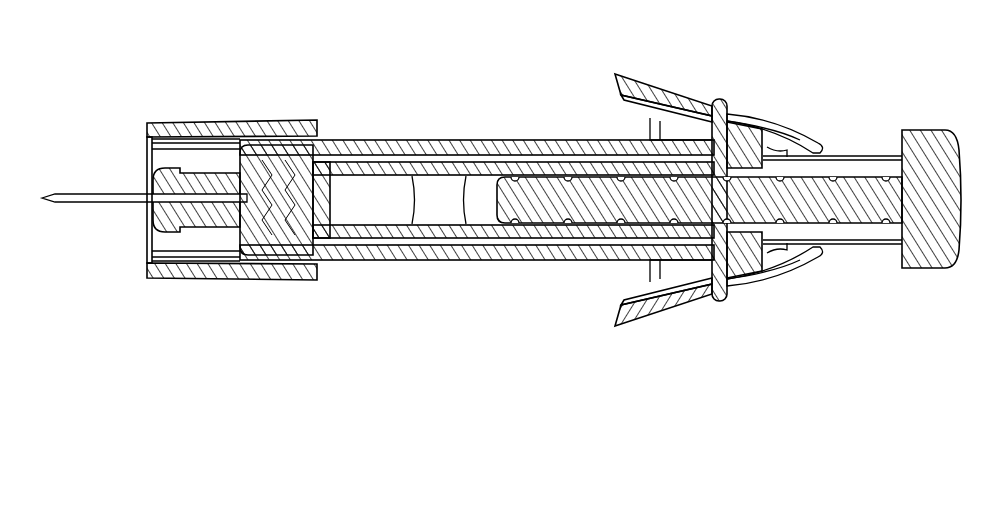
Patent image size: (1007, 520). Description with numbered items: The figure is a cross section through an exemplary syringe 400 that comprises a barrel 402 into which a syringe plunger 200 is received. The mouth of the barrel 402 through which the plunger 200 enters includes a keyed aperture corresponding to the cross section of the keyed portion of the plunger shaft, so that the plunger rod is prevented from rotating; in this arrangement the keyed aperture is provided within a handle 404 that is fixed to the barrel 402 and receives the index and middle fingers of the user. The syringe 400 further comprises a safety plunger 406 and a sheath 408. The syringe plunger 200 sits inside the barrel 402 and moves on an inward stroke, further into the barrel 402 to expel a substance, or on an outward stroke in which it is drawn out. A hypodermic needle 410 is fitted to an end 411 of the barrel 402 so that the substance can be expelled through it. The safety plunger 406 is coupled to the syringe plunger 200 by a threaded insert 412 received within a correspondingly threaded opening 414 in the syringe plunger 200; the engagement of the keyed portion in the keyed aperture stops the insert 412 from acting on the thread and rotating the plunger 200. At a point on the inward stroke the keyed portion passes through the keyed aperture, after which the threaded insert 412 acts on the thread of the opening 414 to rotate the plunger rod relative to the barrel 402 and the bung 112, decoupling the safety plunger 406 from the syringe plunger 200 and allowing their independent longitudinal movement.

The syringe 400 is at (170, 94).
The plunger 200 is at (452, 295).
The barrel 402 is at (346, 140).
The threaded opening 414 is at (433, 190).
The bung 112 is at (197, 200).
The hypodermic needle 410 is at (100, 205).
The end of the barrel 411 is at (232, 270).
The sheath 408 is at (298, 280).
The handle 404 is at (670, 310).
The threaded insert 412 is at (782, 262).
The safety plunger 406 is at (908, 270).